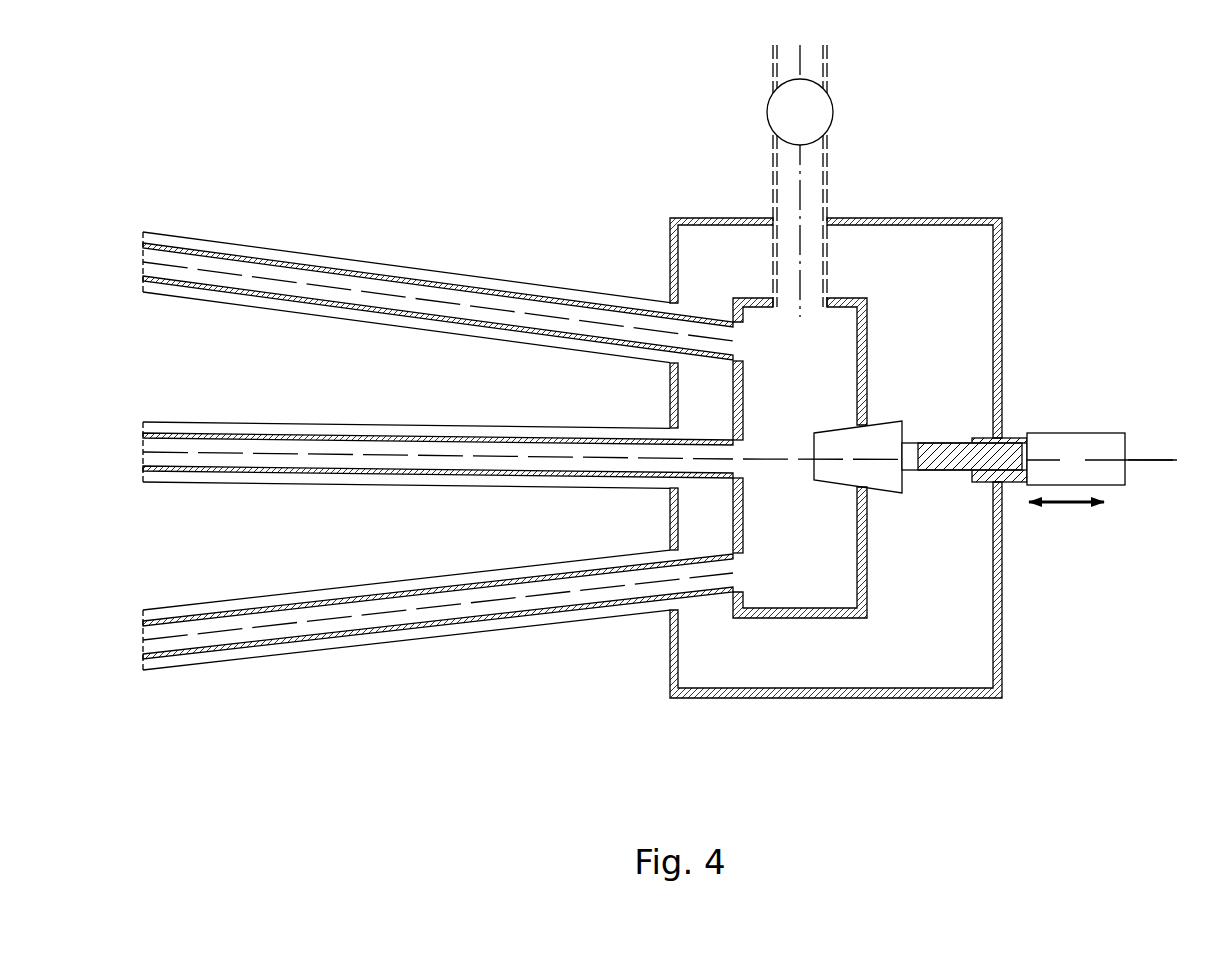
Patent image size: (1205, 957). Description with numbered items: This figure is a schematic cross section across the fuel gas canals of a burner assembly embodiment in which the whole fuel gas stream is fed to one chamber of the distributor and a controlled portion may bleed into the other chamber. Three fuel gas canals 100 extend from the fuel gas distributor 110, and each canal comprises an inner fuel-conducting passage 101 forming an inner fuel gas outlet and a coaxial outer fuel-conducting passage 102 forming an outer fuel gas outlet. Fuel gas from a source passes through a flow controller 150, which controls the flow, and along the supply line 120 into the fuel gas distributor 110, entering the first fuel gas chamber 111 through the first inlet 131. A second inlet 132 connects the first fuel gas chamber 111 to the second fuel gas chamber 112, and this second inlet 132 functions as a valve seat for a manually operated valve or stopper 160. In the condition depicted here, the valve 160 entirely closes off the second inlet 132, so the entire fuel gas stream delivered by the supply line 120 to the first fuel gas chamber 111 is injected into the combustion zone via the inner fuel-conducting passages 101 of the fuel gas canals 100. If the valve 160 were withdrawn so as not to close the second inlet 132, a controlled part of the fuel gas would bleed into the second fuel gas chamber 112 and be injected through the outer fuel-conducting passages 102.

The fuel gas canal 100 is at (358, 244).
The inner fuel-conducting passage 101 is at (140, 258).
The outer fuel-conducting passage 102 is at (352, 428).
The fuel gas distributor 110 is at (1063, 340).
The first fuel gas chamber 111 is at (800, 489).
The second fuel gas chamber 112 is at (836, 590).
The supply line 120 is at (790, 67).
The first inlet 131 is at (789, 312).
The second inlet 132 is at (848, 494).
The flow controller 150 is at (800, 112).
The valve 160 is at (932, 488).